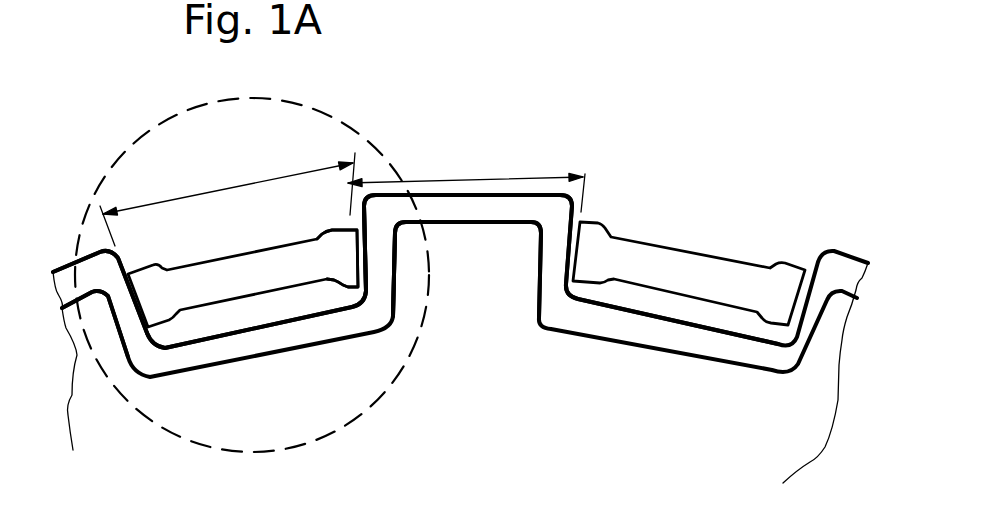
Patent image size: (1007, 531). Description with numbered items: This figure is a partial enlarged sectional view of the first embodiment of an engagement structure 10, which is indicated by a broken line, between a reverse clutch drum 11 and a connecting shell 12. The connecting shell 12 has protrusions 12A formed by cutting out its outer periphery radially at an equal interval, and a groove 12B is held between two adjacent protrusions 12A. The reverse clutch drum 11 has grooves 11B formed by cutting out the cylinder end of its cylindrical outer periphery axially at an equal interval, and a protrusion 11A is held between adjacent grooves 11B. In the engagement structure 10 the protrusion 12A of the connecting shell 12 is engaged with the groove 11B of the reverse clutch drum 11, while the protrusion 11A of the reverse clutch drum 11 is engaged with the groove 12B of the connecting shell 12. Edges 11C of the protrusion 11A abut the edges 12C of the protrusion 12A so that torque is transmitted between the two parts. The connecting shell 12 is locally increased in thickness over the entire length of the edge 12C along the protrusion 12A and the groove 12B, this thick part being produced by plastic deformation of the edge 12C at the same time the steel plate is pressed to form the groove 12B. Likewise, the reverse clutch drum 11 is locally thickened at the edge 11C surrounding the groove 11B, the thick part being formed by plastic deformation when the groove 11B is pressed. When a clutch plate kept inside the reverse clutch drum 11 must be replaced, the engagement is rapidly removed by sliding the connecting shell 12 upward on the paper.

The engagement structure 10 is at (420, 343).
The reverse clutch drum 11 is at (688, 251).
The protrusion 11A is at (258, 248).
The groove 11B is at (483, 179).
The edge 11C is at (340, 260).
The connecting shell 12 is at (765, 438).
The protrusion 12A is at (455, 178).
The groove 12B is at (190, 197).
The edge 12C is at (392, 284).